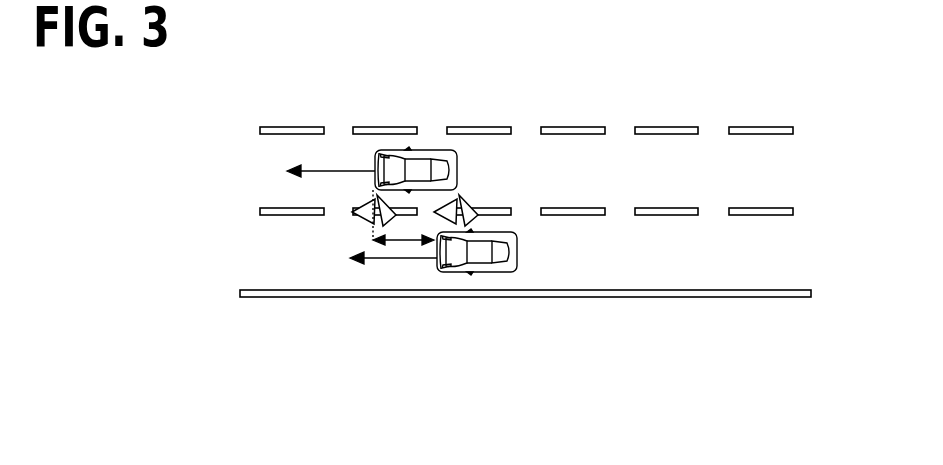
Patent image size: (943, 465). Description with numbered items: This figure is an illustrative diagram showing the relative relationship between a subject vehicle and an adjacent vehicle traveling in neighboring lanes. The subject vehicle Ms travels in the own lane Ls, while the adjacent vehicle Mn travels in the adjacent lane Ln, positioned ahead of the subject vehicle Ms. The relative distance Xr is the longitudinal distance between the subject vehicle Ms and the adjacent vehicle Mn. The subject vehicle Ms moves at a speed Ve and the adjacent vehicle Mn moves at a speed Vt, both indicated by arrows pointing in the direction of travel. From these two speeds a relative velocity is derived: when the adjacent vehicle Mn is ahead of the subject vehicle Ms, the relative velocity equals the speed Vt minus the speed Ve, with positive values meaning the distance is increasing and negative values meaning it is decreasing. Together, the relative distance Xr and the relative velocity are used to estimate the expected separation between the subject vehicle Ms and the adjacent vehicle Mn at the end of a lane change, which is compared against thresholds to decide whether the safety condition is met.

The adjacent lane Ln is at (238, 133).
The own lane Ls is at (238, 215).
The adjacent vehicle Mn is at (457, 165).
The subject vehicle Ms is at (517, 262).
The speed of the adjacent vehicle Vt is at (331, 160).
The speed of the subject vehicle Ve is at (393, 270).
The relative distance Xr is at (403, 217).